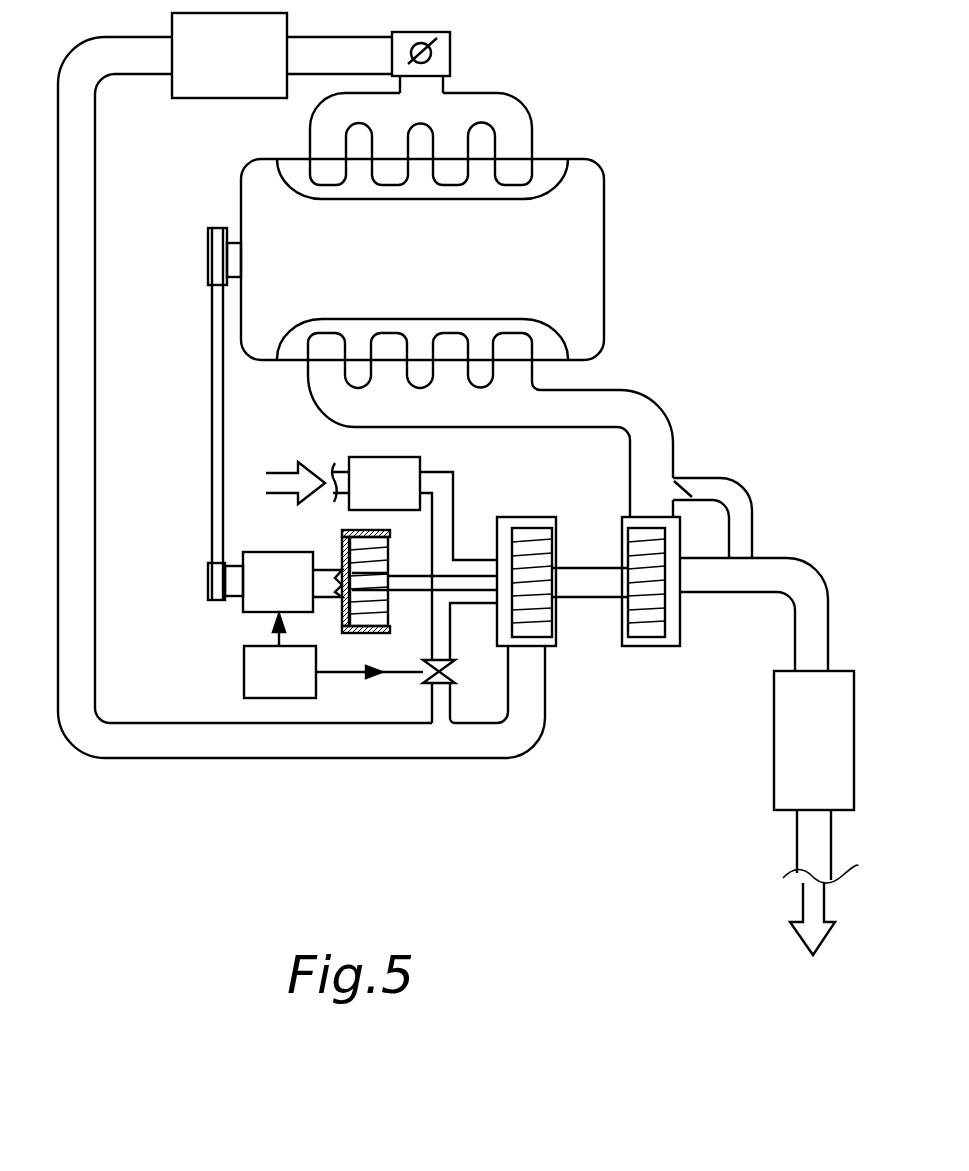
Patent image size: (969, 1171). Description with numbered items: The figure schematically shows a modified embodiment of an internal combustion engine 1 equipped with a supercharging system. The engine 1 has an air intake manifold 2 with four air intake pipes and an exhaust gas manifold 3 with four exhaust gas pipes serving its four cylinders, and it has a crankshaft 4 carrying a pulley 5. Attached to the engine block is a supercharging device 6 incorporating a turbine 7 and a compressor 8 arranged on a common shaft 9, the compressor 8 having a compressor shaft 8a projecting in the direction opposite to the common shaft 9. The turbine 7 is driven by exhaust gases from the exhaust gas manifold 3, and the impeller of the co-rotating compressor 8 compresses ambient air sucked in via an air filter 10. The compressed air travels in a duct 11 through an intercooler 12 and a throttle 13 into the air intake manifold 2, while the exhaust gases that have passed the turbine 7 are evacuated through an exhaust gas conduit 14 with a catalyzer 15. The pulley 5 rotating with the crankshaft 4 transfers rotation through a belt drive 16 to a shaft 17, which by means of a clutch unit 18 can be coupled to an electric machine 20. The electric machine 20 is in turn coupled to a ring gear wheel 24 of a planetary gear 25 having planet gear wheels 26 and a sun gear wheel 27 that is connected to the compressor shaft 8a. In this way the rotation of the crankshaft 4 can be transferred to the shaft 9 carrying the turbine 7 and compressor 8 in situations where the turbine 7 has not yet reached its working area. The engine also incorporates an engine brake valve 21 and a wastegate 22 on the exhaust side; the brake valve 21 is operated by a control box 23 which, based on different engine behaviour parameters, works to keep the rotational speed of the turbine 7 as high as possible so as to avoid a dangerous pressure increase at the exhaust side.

The internal combustion engine 1 is at (622, 197).
The air intake manifold 2 is at (503, 118).
The exhaust gas manifold 3 is at (513, 375).
The crankshaft 4 is at (235, 252).
The pulley 5 is at (208, 250).
The supercharging device 6 is at (611, 613).
The turbine 7 is at (672, 618).
The compressor 8 is at (542, 628).
The compressor shaft 8a is at (463, 582).
The common shaft 9 is at (573, 583).
The air filter 10 is at (398, 498).
The duct 11 is at (70, 397).
The intercooler 12 is at (246, 67).
The throttle 13 is at (444, 57).
The exhaust gas conduit 14 is at (810, 830).
The catalyzer 15 is at (831, 748).
The belt drive 16 is at (213, 455).
The shaft 17 is at (207, 580).
The clutch unit 18 is at (236, 592).
The electric machine 20 is at (293, 595).
The engine brake valve 21 is at (450, 665).
The wastegate 22 is at (693, 488).
The control box 23 is at (294, 682).
The ring gear wheel 24 is at (370, 633).
The planetary gear 25 is at (348, 583).
The planet gear wheels 26 is at (348, 610).
The sun gear wheel 27 is at (382, 580).